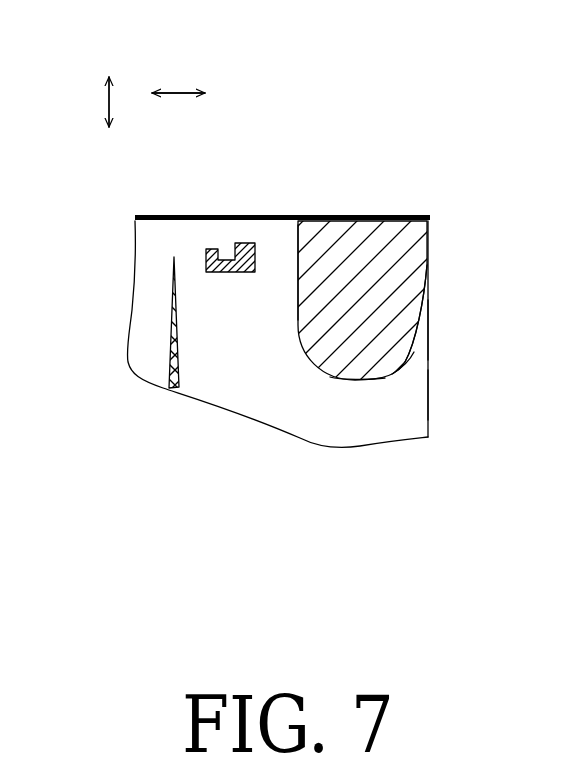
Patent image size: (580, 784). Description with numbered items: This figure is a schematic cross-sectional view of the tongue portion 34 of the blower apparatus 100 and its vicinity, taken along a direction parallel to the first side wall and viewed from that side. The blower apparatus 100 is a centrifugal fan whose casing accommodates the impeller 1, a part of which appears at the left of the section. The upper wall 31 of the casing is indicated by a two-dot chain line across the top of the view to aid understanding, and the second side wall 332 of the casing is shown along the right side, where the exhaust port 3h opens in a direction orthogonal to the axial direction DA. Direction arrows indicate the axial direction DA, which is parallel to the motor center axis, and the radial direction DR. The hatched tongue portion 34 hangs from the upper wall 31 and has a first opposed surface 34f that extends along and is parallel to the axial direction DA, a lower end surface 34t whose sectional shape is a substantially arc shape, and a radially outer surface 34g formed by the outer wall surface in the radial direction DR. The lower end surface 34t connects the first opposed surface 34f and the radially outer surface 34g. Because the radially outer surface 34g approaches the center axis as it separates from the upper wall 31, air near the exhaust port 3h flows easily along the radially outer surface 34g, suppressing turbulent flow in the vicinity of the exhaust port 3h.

The blower apparatus 100 is at (416, 158).
The upper wall 31 is at (202, 215).
The tongue portion 34 is at (397, 386).
The first opposed surface 34f is at (298, 266).
The radially outer surface 34g is at (430, 294).
The second side wall 332 is at (430, 331).
The lower end surface 34t is at (357, 381).
The exhaust port 3h is at (449, 384).
The impeller 1 is at (172, 318).
The axial direction DA is at (108, 102).
The radial direction DR is at (178, 93).